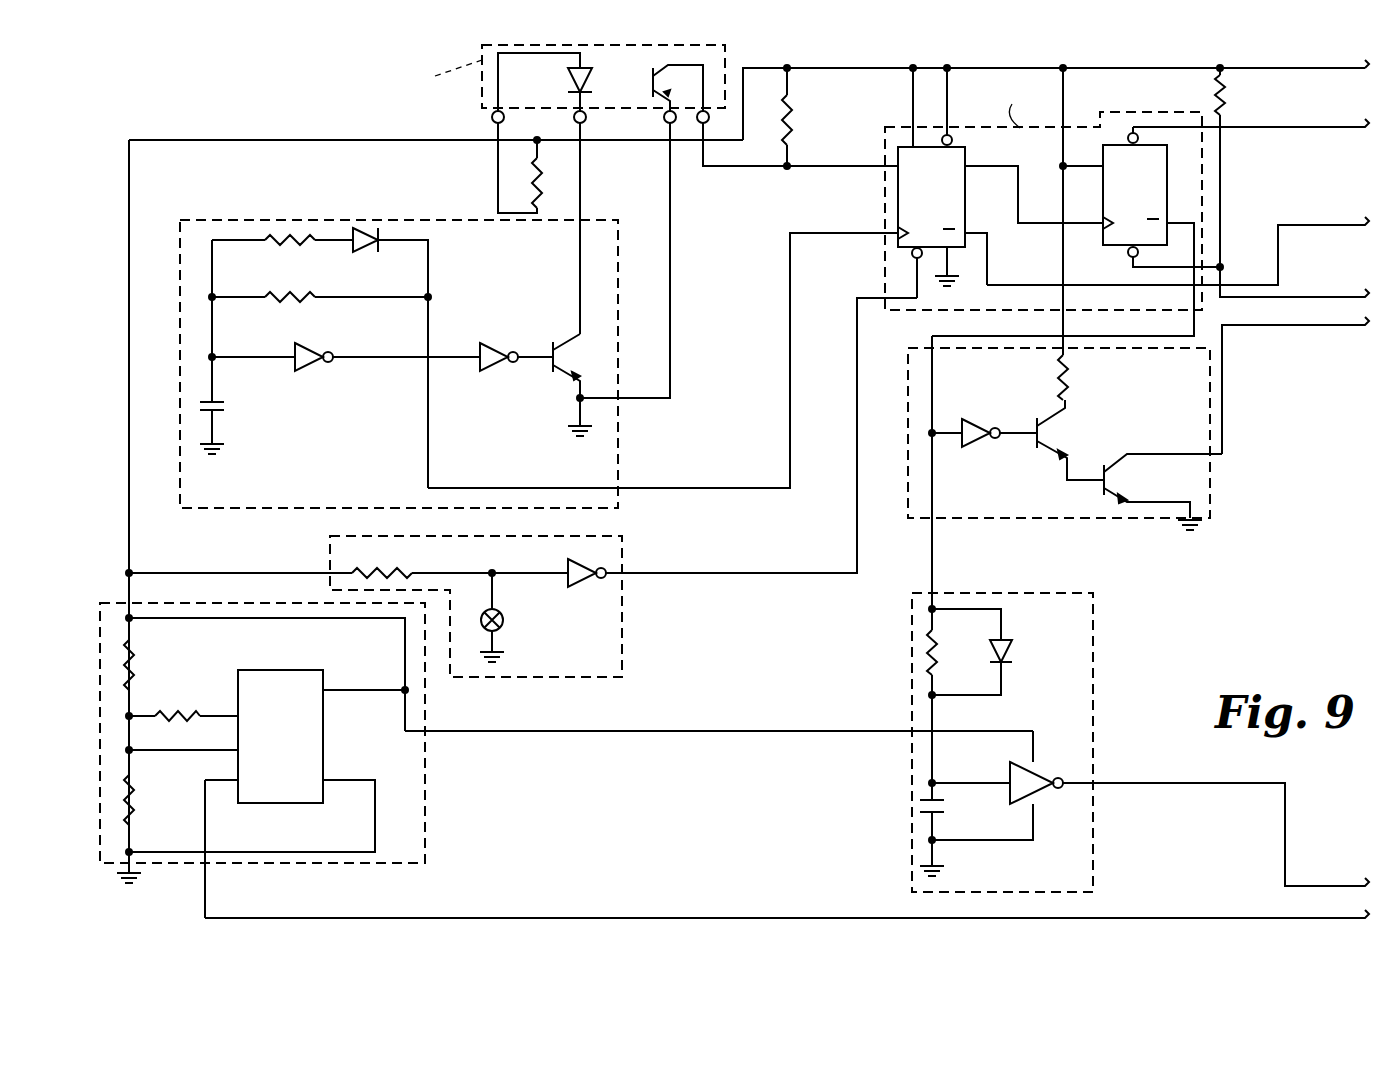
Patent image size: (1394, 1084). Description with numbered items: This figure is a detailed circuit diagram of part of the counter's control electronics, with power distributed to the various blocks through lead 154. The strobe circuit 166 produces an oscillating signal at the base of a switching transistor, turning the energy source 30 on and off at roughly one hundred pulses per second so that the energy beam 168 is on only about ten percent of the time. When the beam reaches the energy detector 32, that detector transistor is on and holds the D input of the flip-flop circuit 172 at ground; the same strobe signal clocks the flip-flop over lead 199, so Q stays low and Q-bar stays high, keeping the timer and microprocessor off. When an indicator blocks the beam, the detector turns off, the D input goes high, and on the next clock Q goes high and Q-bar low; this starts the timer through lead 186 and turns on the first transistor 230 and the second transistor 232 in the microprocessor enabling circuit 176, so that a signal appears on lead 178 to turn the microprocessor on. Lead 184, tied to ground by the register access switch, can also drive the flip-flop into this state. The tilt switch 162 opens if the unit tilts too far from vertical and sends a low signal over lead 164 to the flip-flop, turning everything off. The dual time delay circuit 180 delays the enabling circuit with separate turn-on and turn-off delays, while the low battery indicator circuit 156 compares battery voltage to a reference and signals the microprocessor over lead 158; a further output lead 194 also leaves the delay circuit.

The energy source 30 is at (561, 76).
The energy detector 32 is at (652, 80).
The energy beam 168 is at (627, 215).
The strobe circuit 166 is at (262, 220).
The flip-flop circuit 172 is at (970, 127).
The lead 154 is at (1333, 60).
The lead 184 is at (1286, 126).
The lead 186 is at (1346, 224).
The lead 178 is at (1350, 326).
The microprocessor enabling circuit 176 is at (1097, 472).
The transistor Q3 230 is at (1036, 422).
The transistor Q4 232 is at (1098, 490).
The lead 199 is at (790, 438).
The tilt switch 162 is at (622, 560).
The lead 164 is at (716, 573).
The dual time delay circuit 180 is at (912, 648).
The low battery indicator circuit 156 is at (425, 788).
The output line 194 is at (1348, 886).
The lead 158 is at (862, 918).